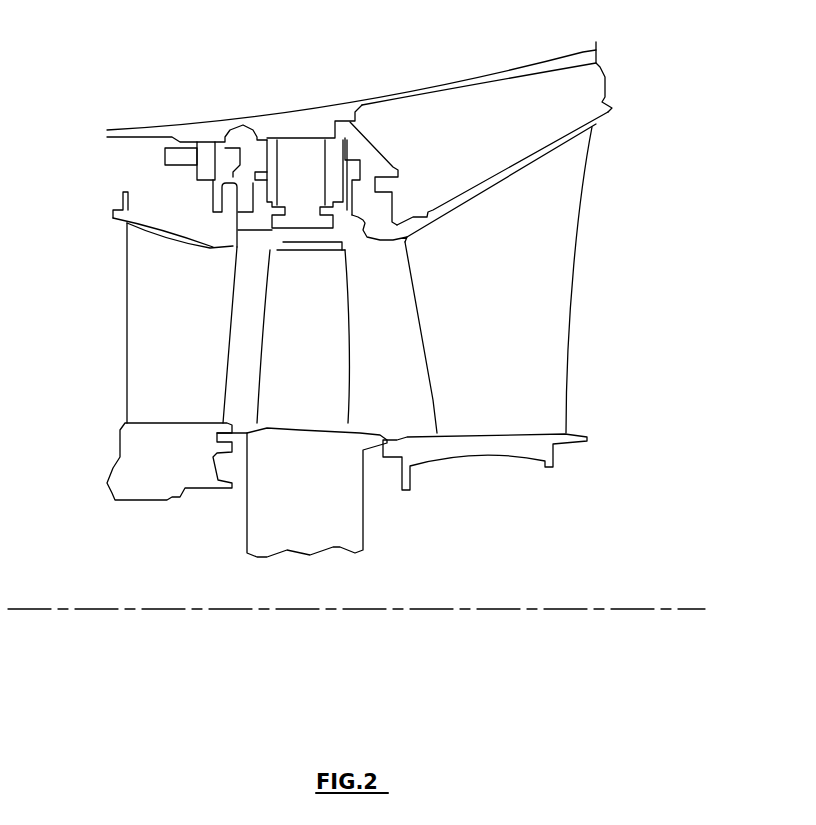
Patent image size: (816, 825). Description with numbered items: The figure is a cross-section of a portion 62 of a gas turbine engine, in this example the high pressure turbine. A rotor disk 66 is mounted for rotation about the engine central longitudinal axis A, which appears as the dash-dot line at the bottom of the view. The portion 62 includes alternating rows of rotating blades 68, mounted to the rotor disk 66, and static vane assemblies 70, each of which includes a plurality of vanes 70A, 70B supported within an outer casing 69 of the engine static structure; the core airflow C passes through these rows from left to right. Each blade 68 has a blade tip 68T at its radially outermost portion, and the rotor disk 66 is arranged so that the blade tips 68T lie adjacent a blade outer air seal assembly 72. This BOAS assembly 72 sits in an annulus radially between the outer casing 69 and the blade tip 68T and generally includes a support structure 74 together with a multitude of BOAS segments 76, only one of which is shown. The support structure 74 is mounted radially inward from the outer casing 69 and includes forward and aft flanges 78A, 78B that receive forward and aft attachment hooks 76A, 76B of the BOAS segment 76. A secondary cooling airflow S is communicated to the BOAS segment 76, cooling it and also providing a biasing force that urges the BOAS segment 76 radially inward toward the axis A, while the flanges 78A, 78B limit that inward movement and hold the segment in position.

The portion of a gas turbine engine 62 is at (648, 184).
The rotor disk 66 is at (388, 539).
The blade 68 is at (318, 380).
The blade tip 68T is at (318, 240).
The outer casing 69 is at (331, 120).
The vane assembly 70 is at (92, 474).
The vane 70A is at (182, 315).
The vane 70B is at (520, 318).
The blade outer air seal (BOAS) assembly 72 is at (270, 258).
The support structure 74 is at (350, 180).
The BOAS segment 76 is at (275, 238).
The forward attachment hook 76A is at (277, 210).
The aft attachment hook 76B is at (333, 211).
The forward flange 78A is at (247, 210).
The aft flange 78B is at (365, 213).
The secondary cooling airflow S is at (301, 212).
The core airflow C is at (240, 363).
The engine central longitudinal axis A is at (585, 610).